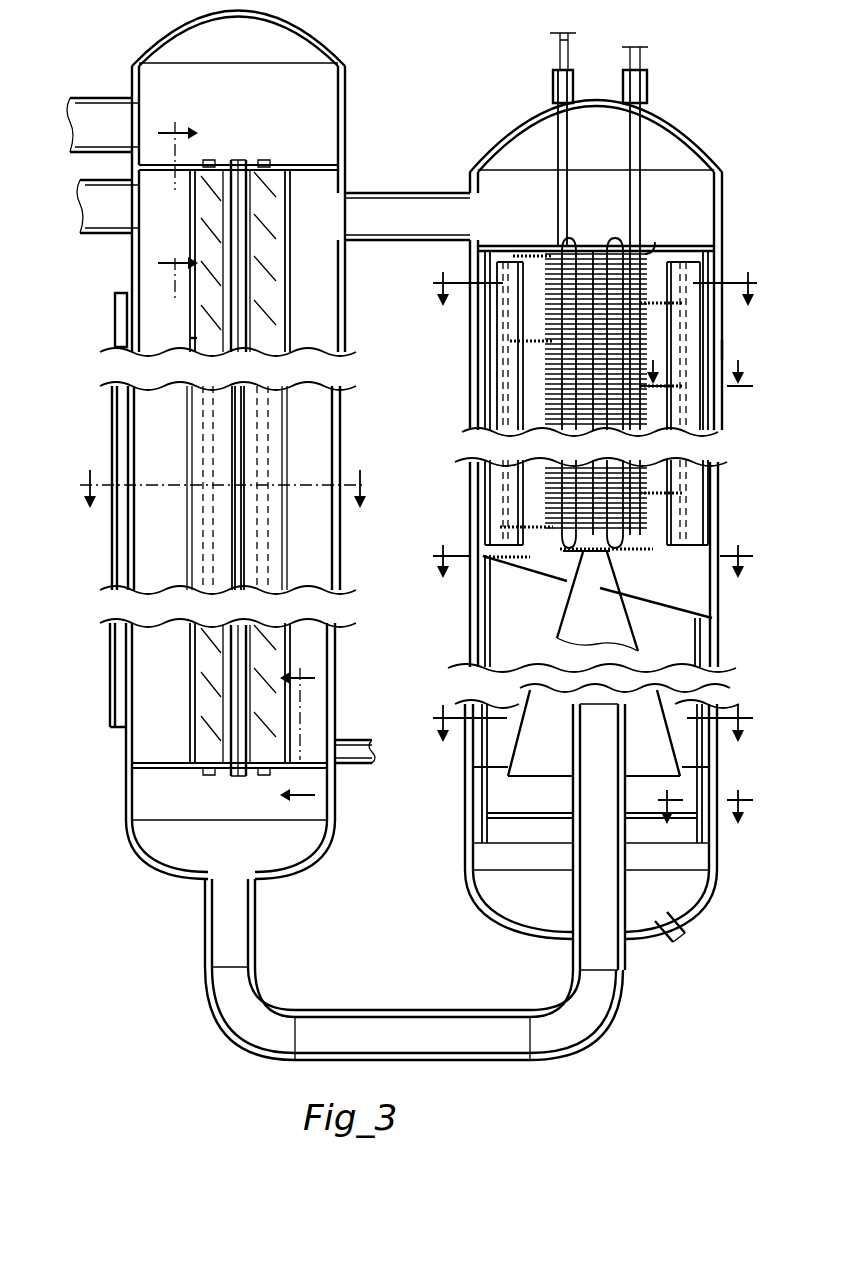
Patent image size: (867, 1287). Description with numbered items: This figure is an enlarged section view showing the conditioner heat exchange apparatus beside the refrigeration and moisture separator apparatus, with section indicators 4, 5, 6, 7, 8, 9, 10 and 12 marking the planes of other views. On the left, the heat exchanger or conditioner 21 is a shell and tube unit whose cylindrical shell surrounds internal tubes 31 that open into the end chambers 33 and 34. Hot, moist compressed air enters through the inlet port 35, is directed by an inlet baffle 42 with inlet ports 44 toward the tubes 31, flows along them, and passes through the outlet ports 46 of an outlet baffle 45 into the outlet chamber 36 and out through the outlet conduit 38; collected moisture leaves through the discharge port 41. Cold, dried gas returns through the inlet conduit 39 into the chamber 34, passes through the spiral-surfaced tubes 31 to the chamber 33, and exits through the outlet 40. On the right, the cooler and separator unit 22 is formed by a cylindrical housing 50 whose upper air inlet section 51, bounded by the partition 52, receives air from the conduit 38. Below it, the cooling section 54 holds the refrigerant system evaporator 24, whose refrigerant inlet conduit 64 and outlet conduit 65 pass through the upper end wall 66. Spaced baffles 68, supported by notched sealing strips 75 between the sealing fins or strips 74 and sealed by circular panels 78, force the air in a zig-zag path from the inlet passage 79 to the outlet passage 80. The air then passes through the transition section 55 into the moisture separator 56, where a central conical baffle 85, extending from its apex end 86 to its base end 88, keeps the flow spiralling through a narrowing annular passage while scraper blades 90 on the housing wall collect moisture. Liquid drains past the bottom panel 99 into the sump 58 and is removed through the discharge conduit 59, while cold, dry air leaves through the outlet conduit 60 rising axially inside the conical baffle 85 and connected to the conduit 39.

The heat exchanger or conditioner 21 is at (350, 160).
The refrigerated cooler and moisture separator unit 22 is at (730, 470).
The refrigerant system evaporator 24 is at (542, 272).
The internal tubes 31 is at (208, 160).
The end chamber (outlet chamber) 33 is at (300, 52).
The end chamber (inlet chamber) 34 is at (172, 848).
The inlet port 35 is at (118, 228).
The outlet chamber 36 is at (318, 434).
The outlet conduit 38 is at (380, 200).
The inlet conduit (discharge conduit) 39 is at (240, 931).
The outlet 40 is at (95, 106).
The discharge port 41 is at (352, 768).
The inlet baffle 42 is at (190, 340).
The inlet ports 44 is at (190, 186).
The outlet baffle 45 is at (286, 306).
The outlet ports 46 is at (287, 748).
The cylindrical housing 50 is at (723, 353).
The upper air inlet section 51 is at (698, 157).
The internal partition or baffle 52 is at (693, 247).
The cooling section 54 is at (532, 302).
The transition section 55 is at (658, 581).
The moisture separator 56 is at (669, 646).
The sump 58 is at (684, 891).
The discharge conduit 59 is at (669, 949).
The outlet conduit 60 is at (616, 732).
The refrigerant inlet conduit 64 is at (553, 137).
The refrigerant outlet conduit 65 is at (641, 143).
The upper end wall 66 is at (704, 88).
The baffles 68 is at (535, 348).
The longitudinal sealing fins or strips 74 is at (492, 259).
The notched sealing strip 75 is at (730, 266).
The circular panels 78 is at (497, 240).
The inlet passage 79 is at (656, 243).
The outlet passage 80 is at (487, 554).
The central conical baffle 85 is at (683, 753).
The apex end 86 is at (604, 552).
The base end 88 is at (555, 752).
The scraper blades 90 is at (489, 634).
The bottom panel 99 is at (505, 805).
The section line 4- 4 is at (223, 507).
The section line 5- 5 is at (178, 202).
The section line 6- 6 is at (285, 728).
The section line 7- 7 is at (594, 307).
The section line 8- 8 is at (583, 576).
The section line 9- 9 is at (591, 739).
The section line 10- 10 is at (704, 831).
The section line 12- 12 is at (707, 363).